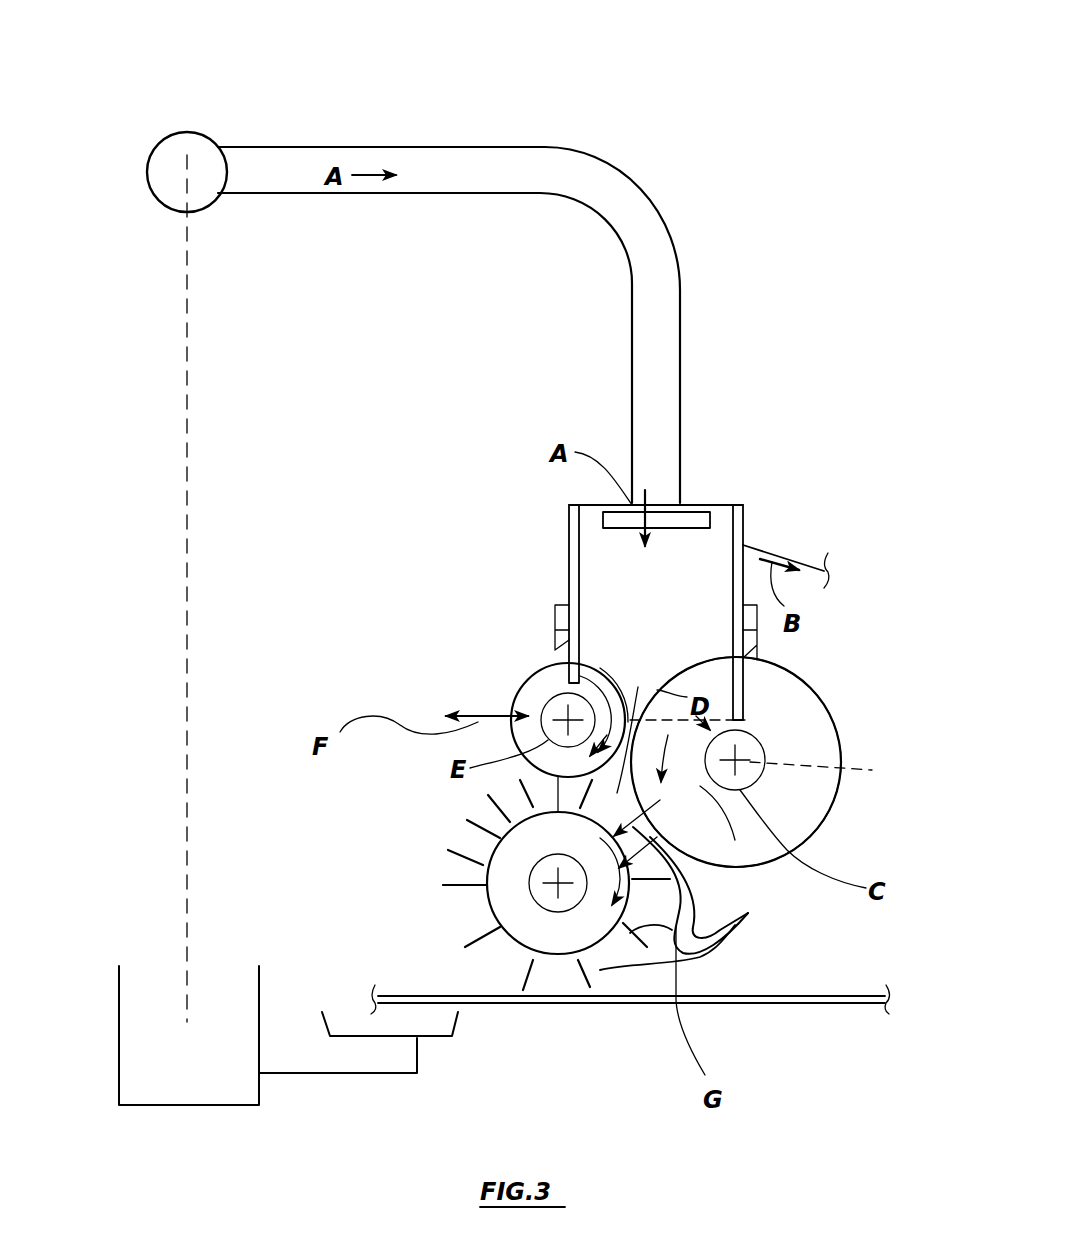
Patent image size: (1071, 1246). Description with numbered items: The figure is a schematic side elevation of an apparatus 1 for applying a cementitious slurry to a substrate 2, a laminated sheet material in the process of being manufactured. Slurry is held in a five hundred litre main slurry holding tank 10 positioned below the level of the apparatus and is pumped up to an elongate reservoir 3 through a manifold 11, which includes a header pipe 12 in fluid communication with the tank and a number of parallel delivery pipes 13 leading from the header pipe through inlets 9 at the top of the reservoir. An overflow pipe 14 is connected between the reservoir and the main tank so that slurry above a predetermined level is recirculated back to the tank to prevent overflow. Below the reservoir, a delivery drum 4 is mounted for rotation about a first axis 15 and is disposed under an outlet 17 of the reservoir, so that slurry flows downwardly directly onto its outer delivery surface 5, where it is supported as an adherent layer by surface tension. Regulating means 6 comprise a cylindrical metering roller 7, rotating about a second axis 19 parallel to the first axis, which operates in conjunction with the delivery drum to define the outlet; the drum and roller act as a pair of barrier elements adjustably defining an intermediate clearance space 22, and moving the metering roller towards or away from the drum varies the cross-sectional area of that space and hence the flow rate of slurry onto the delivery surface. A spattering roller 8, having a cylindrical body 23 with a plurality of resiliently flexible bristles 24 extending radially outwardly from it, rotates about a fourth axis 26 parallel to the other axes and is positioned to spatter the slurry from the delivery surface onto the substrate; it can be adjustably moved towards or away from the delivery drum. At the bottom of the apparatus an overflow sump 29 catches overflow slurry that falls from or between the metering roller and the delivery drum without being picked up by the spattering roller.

The apparatus 1 is at (431, 441).
The substrate 2 is at (420, 992).
The reservoir 3 is at (568, 532).
The delivery drum 4 is at (833, 712).
The outer delivery surface 5 is at (797, 676).
The regulating means 6 is at (643, 671).
The metering roller 7 is at (528, 690).
The spattering roller 8 is at (479, 810).
The inlets 9 is at (655, 508).
The main slurry holding tank 10 is at (258, 976).
The manifold 11 is at (299, 116).
The header pipe 12 is at (178, 130).
The delivery pipes 13 is at (463, 146).
The overflow pipe 14 is at (772, 552).
The first axis 15 is at (740, 780).
The outlet 17 is at (832, 774).
The second axis 19 is at (560, 716).
The clearance space 22 is at (631, 790).
The cylindrical body 23 is at (480, 868).
The bristles 24 is at (686, 898).
The fourth axis 26 is at (558, 888).
The overflow sump 29 is at (345, 1035).